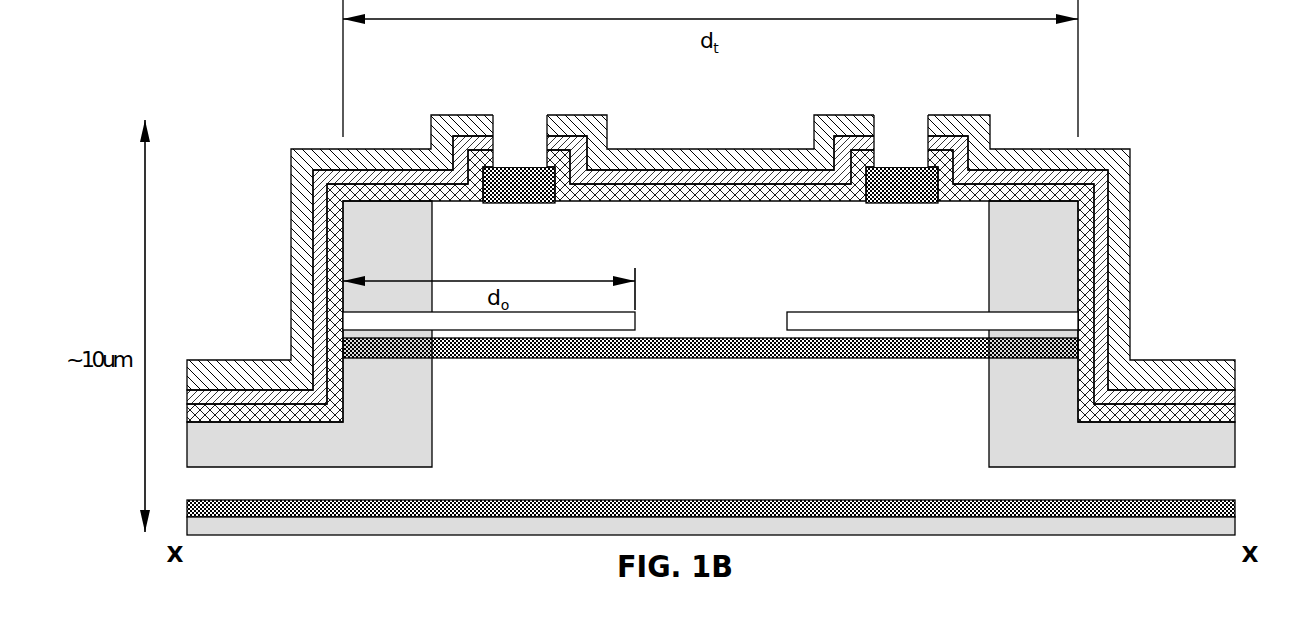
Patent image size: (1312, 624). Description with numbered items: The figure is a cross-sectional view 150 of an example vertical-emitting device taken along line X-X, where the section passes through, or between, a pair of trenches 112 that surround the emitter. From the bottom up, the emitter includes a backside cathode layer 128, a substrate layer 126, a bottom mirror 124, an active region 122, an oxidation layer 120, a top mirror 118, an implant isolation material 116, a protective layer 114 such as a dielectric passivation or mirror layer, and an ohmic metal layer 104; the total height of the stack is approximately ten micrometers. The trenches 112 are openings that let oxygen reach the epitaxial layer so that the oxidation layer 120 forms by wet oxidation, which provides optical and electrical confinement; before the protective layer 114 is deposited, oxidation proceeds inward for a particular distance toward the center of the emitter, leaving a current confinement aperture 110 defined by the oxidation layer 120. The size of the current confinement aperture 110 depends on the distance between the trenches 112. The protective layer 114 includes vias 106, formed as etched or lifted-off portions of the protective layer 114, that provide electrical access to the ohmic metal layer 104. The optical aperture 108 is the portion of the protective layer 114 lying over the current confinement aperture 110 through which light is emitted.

The cross-sectional view 150 is at (200, 61).
The ohmic metal layer 104 is at (516, 192).
The via 106 is at (899, 65).
The optical aperture 108 is at (805, 130).
The current confinement aperture 110 is at (788, 312).
The trench 112 is at (706, 264).
The protective layer 114 is at (383, 200).
The implant isolation material 116 is at (369, 249).
The top mirror 118 is at (779, 248).
The oxidation layer 120 is at (1030, 325).
The active region 122 is at (965, 359).
The bottom mirror 124 is at (687, 438).
The substrate layer 126 is at (1237, 508).
The backside cathode layer 128 is at (1237, 528).